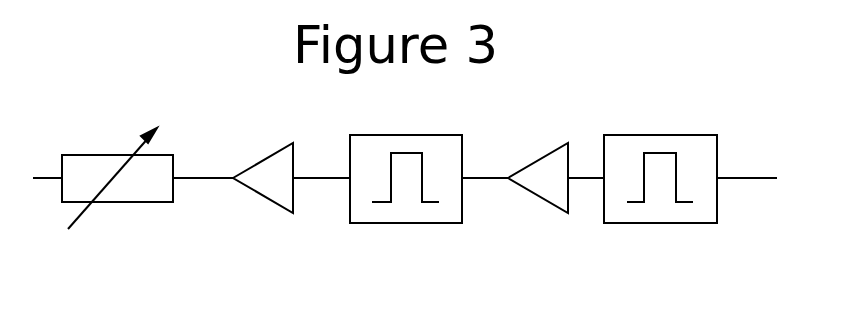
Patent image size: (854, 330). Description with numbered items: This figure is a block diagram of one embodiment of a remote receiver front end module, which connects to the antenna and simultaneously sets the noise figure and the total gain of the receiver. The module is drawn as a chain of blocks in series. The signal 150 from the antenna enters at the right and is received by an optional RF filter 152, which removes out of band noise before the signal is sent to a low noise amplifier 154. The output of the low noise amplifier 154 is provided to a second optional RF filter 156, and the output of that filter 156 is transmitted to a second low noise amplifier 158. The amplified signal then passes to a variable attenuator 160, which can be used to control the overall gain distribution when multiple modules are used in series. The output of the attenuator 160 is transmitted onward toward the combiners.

The input signal line 150 is at (742, 178).
The first pulse filter 152 is at (642, 135).
The first amplifier 154 is at (532, 163).
The second pulse filter 156 is at (373, 135).
The second amplifier 158 is at (253, 165).
The variable attenuator 160 is at (88, 155).